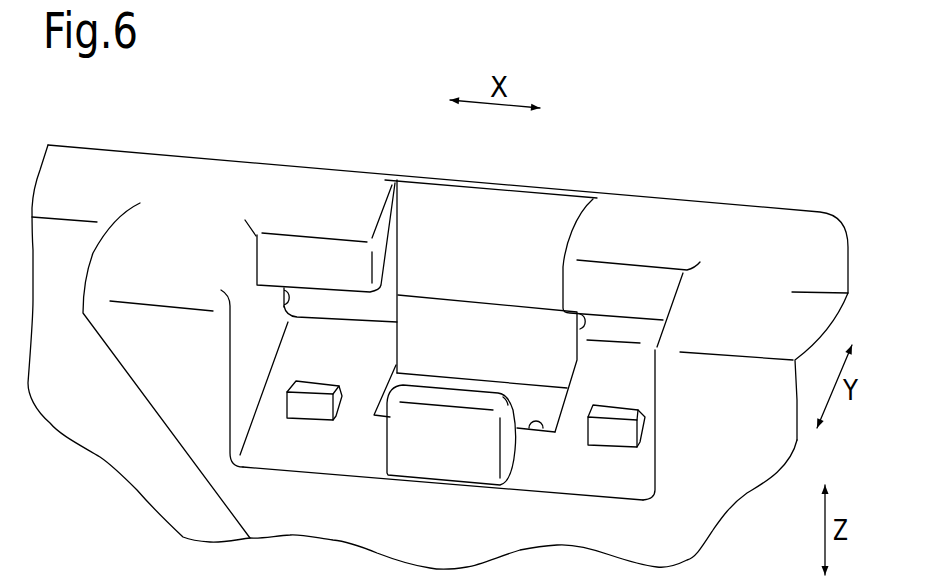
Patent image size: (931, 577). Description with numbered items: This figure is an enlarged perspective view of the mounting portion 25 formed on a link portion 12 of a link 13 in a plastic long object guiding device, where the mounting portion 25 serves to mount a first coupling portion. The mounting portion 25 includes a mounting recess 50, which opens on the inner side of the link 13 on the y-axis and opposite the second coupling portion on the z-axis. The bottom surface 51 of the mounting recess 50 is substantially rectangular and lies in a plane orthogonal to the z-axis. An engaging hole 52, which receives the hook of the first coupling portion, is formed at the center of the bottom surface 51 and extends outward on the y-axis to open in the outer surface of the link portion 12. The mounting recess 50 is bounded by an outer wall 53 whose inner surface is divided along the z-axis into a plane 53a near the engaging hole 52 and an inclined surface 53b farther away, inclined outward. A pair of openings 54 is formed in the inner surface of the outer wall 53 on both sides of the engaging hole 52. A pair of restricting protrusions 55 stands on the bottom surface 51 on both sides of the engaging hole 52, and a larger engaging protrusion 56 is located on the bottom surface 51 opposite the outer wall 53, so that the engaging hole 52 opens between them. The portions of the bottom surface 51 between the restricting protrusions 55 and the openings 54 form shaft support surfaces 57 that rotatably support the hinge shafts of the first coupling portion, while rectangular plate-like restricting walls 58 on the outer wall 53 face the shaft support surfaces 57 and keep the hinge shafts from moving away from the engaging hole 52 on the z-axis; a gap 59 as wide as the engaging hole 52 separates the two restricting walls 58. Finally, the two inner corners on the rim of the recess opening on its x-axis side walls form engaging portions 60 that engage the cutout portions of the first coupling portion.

The link portion 12 is at (722, 203).
The link 13 is at (778, 204).
The mounting portion 25 is at (620, 228).
The mounting recess 50 is at (627, 470).
The bottom surface 51 is at (598, 473).
The engaging hole 52 is at (543, 432).
The outer wall 53 is at (480, 210).
The plane 53a is at (413, 337).
The inclined surface 53b is at (543, 215).
The openings 54 is at (283, 303).
The restricting protrusions 55 is at (312, 408).
The engaging protrusion 56 is at (442, 460).
The shaft support surfaces 57 is at (312, 345).
The restricting walls 58 is at (353, 205).
The gap 59 is at (395, 228).
The engaging portions 60 is at (222, 316).